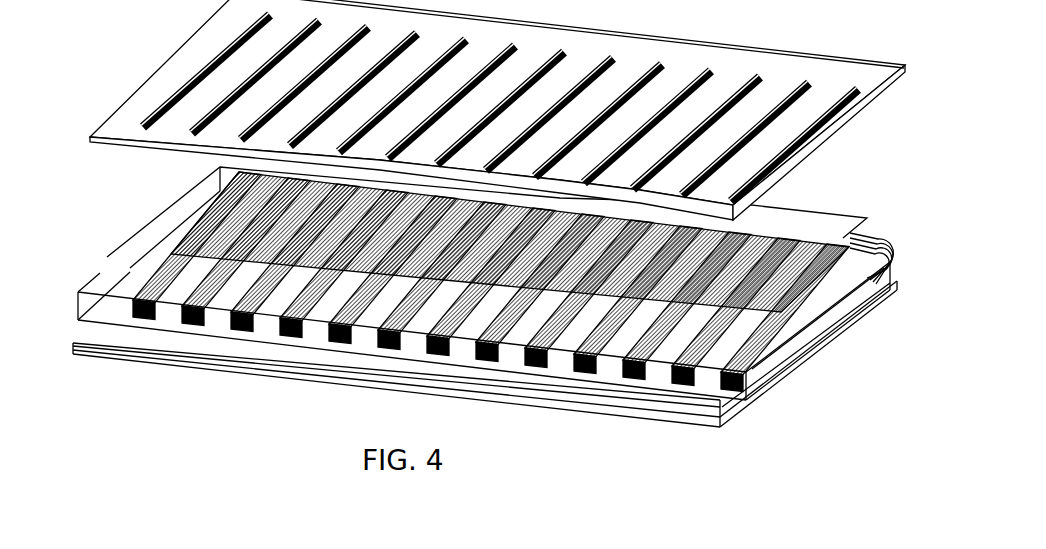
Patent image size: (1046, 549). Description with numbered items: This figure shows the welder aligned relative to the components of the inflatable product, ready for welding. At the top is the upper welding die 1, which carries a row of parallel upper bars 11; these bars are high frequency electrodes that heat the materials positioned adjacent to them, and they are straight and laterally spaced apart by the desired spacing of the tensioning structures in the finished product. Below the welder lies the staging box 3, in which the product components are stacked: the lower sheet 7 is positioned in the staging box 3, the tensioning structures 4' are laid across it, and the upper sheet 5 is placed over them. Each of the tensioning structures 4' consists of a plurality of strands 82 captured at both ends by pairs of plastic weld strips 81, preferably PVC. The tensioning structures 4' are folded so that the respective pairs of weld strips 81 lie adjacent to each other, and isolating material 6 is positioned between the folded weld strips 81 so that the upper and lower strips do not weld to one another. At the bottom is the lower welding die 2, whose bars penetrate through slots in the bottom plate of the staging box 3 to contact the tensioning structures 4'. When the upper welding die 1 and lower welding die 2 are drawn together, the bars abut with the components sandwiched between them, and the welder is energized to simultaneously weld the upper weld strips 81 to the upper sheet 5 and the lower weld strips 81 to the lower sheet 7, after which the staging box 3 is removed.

The upper welding die 1 is at (897, 72).
The upper bars 11 is at (863, 86).
The upper sheet 5 is at (823, 220).
The tensioning structures 4' is at (444, 282).
The weld strips 81 is at (853, 232).
The isolating material 6 is at (870, 247).
The strands 82 is at (893, 273).
The staging box 3 is at (887, 293).
The lower sheet 7 is at (760, 397).
The lower welding die 2 is at (726, 428).